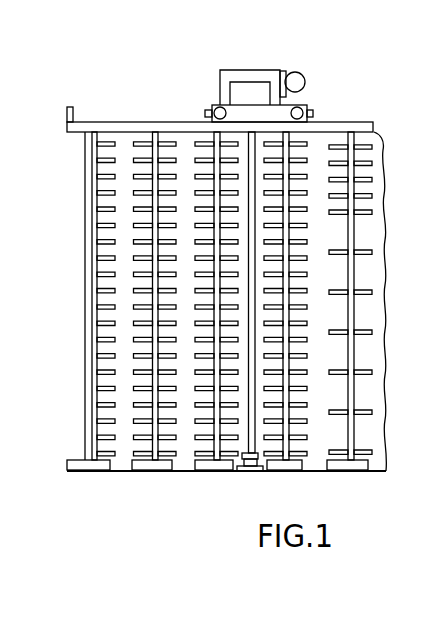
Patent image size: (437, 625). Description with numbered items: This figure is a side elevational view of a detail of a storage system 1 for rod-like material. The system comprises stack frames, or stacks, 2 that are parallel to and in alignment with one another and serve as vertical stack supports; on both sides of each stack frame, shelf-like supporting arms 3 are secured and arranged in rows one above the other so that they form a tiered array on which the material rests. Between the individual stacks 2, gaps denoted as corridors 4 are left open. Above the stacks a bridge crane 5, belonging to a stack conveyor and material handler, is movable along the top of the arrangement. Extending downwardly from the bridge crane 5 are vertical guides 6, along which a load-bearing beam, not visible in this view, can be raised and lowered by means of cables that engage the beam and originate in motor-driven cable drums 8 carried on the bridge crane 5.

The storage system 1 is at (158, 104).
The stack frame 2 is at (88, 190).
The shelf-like supporting arm 3 is at (100, 366).
The corridor 4 is at (182, 438).
The bridge crane 5 is at (253, 71).
The vertical guide 6 is at (255, 158).
The motor-driven cable drum 8 is at (295, 72).